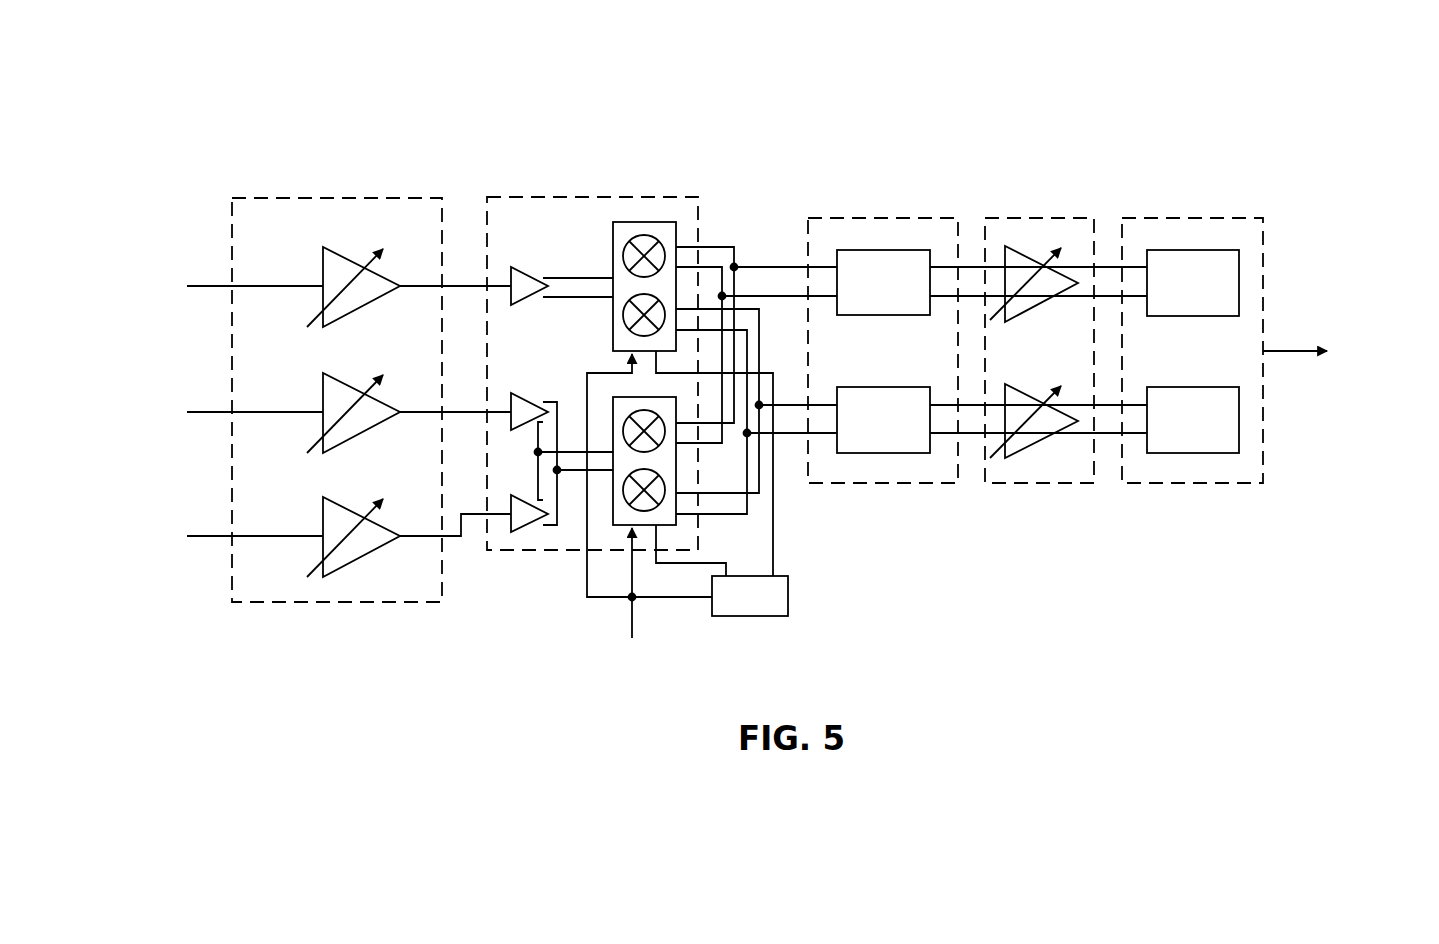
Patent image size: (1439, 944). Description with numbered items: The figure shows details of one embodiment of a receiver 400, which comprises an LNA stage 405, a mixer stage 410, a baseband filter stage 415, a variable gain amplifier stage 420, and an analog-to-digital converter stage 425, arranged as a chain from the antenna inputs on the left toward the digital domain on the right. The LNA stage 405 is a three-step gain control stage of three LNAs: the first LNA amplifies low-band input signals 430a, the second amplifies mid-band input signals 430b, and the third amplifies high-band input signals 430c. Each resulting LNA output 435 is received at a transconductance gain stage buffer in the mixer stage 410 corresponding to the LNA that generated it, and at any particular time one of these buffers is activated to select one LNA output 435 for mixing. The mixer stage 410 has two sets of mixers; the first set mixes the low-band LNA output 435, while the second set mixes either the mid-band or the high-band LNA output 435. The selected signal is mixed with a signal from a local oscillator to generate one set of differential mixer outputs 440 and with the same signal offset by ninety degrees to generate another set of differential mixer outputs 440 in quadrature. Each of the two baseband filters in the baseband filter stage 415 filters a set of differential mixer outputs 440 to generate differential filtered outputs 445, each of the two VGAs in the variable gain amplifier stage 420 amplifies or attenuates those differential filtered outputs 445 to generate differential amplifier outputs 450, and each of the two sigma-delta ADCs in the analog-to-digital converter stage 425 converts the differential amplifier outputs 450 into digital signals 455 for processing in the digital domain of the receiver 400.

The receiver 400 is at (929, 97).
The LNA stage 405 is at (333, 198).
The mixer stage 410 is at (590, 197).
The baseband filter stage 415 is at (880, 217).
The variable gain amplifier stage 420 is at (1052, 217).
The analog-to-digital converter stage 425 is at (1193, 217).
The low-band input signals 430a is at (210, 286).
The mid-band input signals 430b is at (210, 412).
The high-band input signals 430c is at (210, 536).
The LNA output 435 is at (469, 565).
The differential mixer outputs 440 is at (772, 239).
The differential filtered outputs 445 is at (970, 490).
The differential amplifier outputs 450 is at (1108, 490).
The digital signals 455 is at (1298, 351).